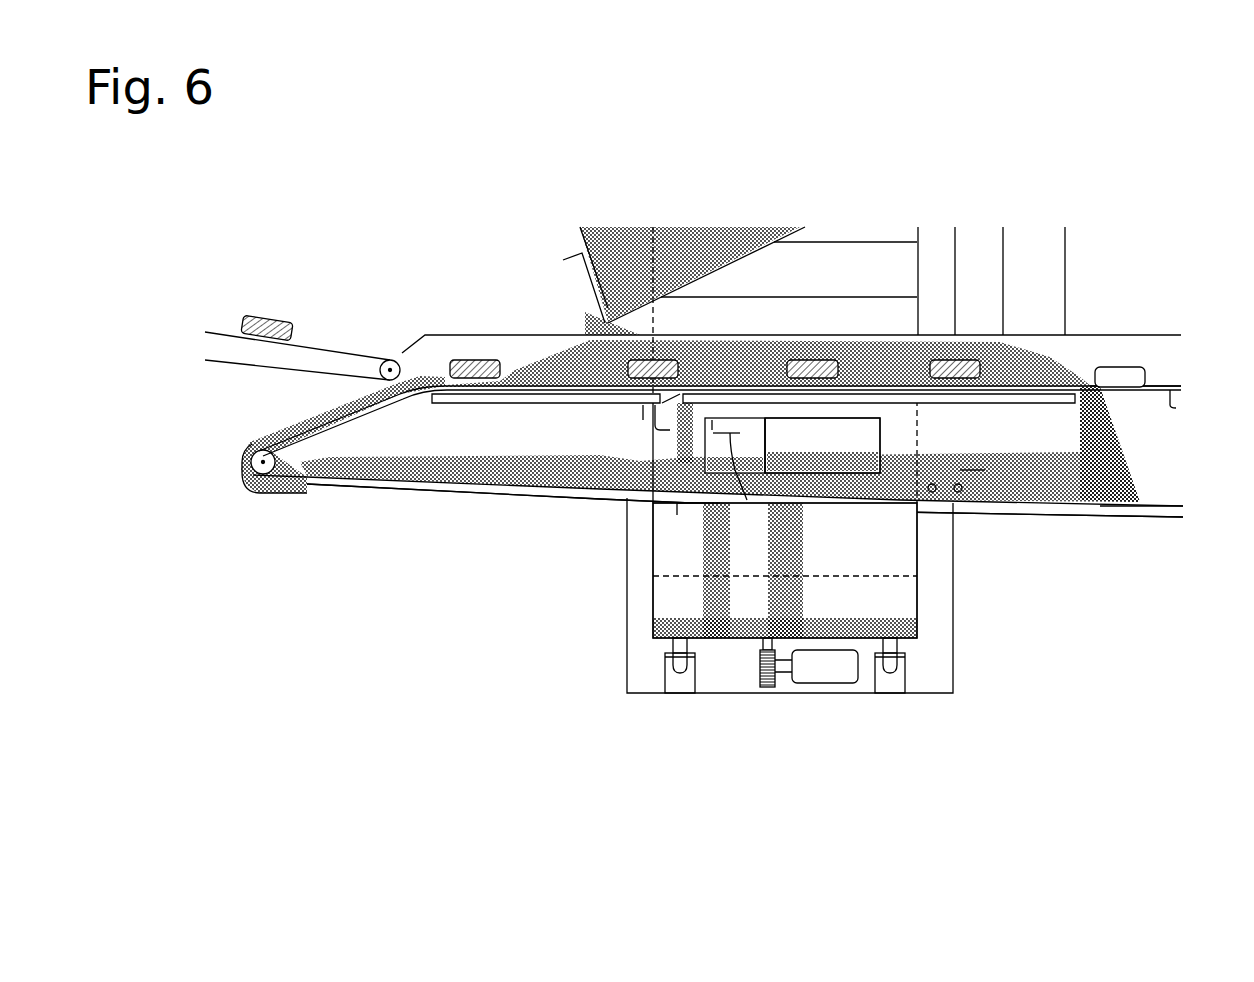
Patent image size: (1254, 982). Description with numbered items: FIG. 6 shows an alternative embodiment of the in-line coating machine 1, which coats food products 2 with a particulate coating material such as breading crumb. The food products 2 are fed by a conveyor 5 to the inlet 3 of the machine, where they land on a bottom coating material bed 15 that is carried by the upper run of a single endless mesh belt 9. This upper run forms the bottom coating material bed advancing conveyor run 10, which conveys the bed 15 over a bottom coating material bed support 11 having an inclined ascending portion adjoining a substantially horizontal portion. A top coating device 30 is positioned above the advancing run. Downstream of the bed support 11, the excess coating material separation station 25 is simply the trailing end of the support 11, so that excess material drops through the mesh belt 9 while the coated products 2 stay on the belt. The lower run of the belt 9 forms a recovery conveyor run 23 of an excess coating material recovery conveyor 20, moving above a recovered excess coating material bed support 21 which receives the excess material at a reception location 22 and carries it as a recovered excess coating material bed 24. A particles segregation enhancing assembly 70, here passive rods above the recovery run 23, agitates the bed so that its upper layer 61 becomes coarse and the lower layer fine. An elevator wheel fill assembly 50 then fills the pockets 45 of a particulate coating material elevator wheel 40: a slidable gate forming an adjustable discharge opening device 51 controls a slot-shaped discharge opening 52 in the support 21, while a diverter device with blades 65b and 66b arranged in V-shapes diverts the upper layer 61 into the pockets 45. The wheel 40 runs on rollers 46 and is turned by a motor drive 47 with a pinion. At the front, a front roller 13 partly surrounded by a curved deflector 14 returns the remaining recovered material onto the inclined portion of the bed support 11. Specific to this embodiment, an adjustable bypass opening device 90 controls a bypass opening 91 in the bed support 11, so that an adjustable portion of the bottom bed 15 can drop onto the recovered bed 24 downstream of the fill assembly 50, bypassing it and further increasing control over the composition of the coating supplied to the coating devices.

The coating machine 1 is at (719, 471).
The food products 2 is at (268, 318).
The inlet 3 is at (420, 330).
The conveyor 5 is at (327, 350).
The endless belt 9 is at (1178, 405).
The bottom coating material bed advancing conveyor run 10 is at (719, 396).
The bottom coating material bed support 11 is at (352, 417).
The front roller 13 is at (255, 450).
The curved deflector 14 is at (243, 480).
The bottom coating material bed 15 is at (520, 383).
The excess coating material recovery conveyor 20 is at (1143, 487).
The recovered excess coating material bed support 21 is at (515, 494).
The reception location 22 is at (1107, 458).
The recovery conveyor run 23 is at (1170, 504).
The recovered excess coating material bed 24 is at (500, 470).
The excess coating material separation station 25 is at (1100, 355).
The top coating device 30 is at (575, 240).
The particulate coating material elevator wheel 40 is at (922, 598).
The pockets 45 is at (898, 228).
The rollers 46 is at (655, 660).
The motor drive 47 is at (817, 672).
The elevator wheel fill assembly 50 is at (890, 441).
The adjustable discharge opening device 51 is at (677, 516).
The discharge opening 52 is at (747, 500).
The upper layer 61 is at (972, 468).
The diverter blade 65b is at (792, 440).
The diverter blade 66b is at (713, 433).
The particles segregation enhancing assembly 70 is at (934, 492).
The adjustable bypass opening device 90 is at (645, 425).
The bypass opening 91 is at (712, 425).